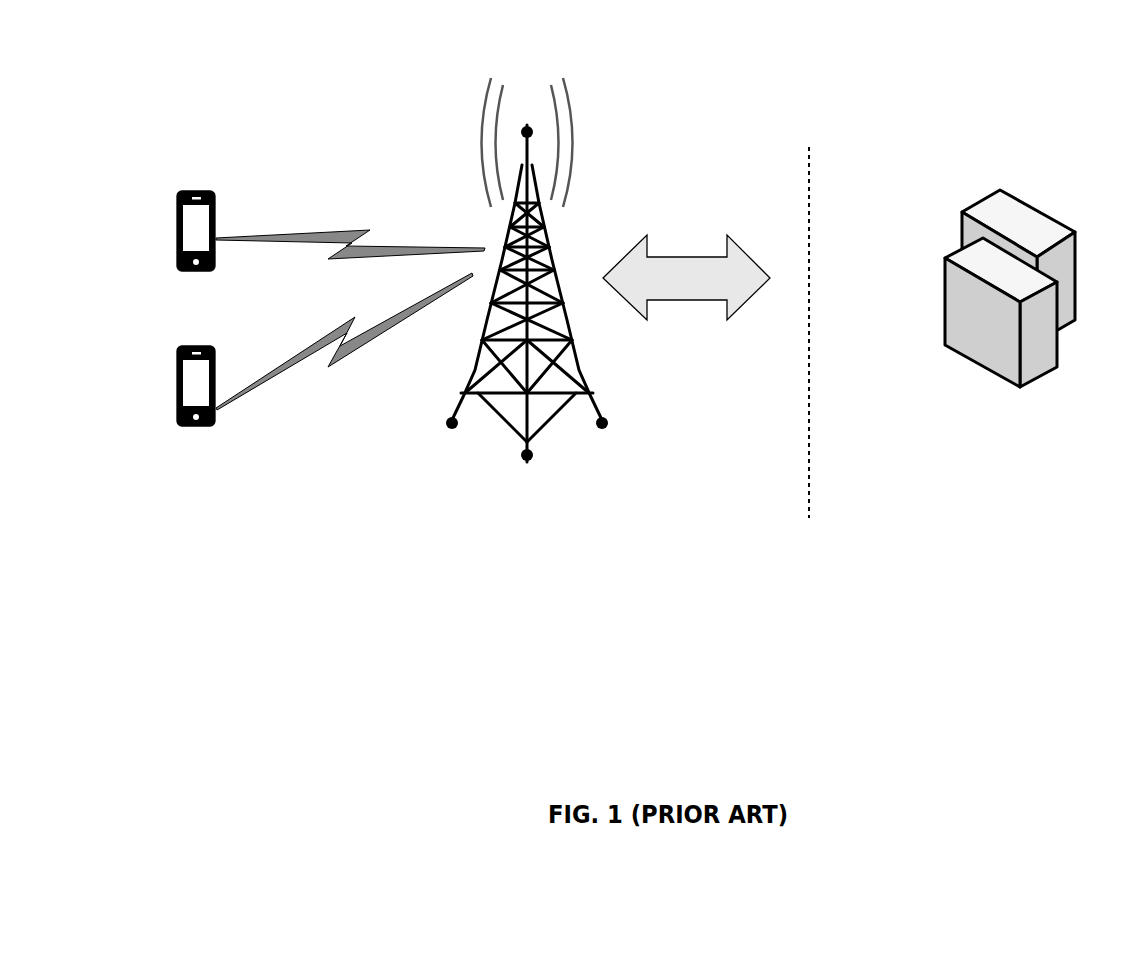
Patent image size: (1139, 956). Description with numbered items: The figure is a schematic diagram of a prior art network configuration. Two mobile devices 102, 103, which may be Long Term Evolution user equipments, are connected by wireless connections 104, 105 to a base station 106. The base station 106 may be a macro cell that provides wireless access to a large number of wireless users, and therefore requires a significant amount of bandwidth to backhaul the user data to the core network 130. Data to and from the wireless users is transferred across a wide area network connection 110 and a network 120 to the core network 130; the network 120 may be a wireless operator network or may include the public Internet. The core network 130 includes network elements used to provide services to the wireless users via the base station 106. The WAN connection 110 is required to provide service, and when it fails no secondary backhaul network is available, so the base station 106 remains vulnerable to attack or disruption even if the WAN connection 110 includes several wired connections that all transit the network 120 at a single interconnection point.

The mobile device 102 is at (175, 210).
The mobile device 103 is at (175, 372).
The wireless connection 104 is at (268, 225).
The wireless connection 105 is at (268, 342).
The base station 106 is at (467, 170).
The wide area network (WAN) connection 110 is at (690, 232).
The network 120 is at (898, 102).
The core network 130 is at (960, 218).